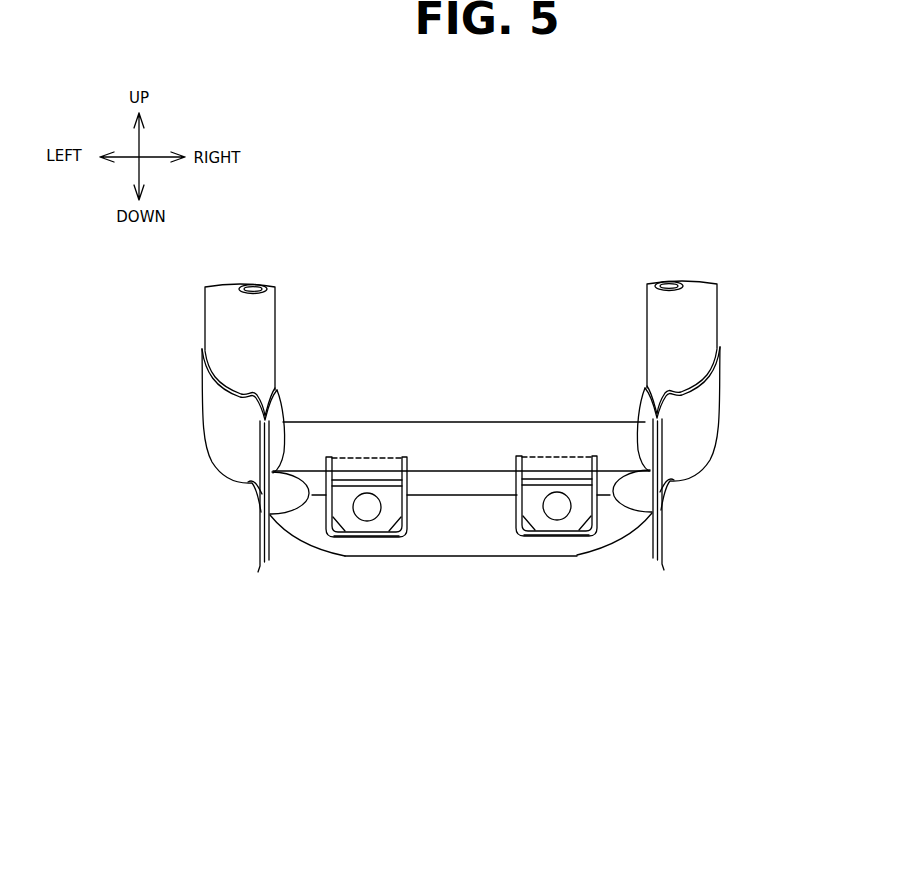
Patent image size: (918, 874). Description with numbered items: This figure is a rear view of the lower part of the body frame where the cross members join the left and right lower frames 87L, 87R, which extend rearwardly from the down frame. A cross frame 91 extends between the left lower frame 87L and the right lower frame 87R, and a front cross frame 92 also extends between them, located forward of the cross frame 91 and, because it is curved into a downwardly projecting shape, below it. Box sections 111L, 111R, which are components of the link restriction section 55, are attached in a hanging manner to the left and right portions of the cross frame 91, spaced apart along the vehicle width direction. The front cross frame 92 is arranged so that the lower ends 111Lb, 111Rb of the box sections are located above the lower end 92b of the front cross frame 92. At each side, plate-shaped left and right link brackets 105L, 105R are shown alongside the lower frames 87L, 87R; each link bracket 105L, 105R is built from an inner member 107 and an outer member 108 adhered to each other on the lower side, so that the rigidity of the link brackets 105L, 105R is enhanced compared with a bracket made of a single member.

The link restriction section 55 is at (459, 543).
The left lower frame 87L is at (220, 320).
The right lower frame 87R is at (697, 318).
The cross frame 91 is at (451, 444).
The front cross frame 92 is at (462, 534).
The lower end of the front cross frame 92b is at (425, 557).
The left link bracket 105L is at (266, 596).
The right link bracket 105R is at (651, 593).
The inner member 107 is at (268, 560).
The outer member 108 is at (259, 563).
The left box section 111L is at (372, 560).
The lower end of the left box section 111Lb is at (353, 540).
The right box section 111R is at (564, 560).
The lower end of the right box section 111Rb is at (538, 539).